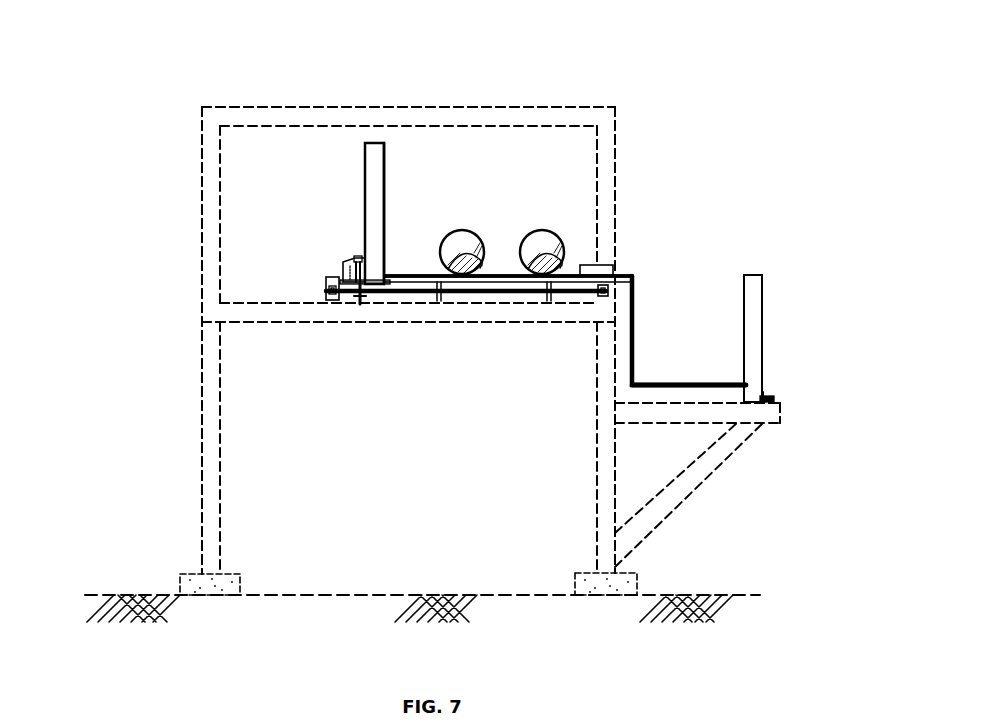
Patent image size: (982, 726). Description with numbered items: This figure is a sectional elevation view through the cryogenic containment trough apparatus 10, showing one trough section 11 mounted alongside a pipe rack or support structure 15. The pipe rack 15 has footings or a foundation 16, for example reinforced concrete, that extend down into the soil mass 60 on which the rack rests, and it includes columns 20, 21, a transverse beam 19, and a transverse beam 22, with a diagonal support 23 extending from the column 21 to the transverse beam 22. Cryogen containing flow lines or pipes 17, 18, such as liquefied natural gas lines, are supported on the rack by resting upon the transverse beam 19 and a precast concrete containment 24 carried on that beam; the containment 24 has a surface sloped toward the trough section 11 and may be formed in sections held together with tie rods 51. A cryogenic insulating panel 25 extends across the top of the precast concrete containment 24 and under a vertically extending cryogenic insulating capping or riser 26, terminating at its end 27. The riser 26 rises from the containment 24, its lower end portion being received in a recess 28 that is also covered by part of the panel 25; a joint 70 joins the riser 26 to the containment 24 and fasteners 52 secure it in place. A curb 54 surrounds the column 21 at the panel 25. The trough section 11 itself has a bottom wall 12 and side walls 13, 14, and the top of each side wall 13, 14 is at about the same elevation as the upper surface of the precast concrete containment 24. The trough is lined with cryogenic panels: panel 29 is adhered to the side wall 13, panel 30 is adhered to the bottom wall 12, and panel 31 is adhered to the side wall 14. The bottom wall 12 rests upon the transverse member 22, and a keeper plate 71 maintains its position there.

The cryogenic containment trough apparatus 10 is at (745, 84).
The trough section 11 is at (762, 313).
The bottom wall 12 is at (705, 403).
The side wall 13 is at (630, 322).
The side wall 14 is at (753, 275).
The pipe rack 15 is at (505, 107).
The footings 16 is at (240, 586).
The flow line 17 is at (462, 230).
The flow line 18 is at (545, 231).
The transverse beam 19 is at (298, 322).
The column 20 is at (202, 376).
The column 21 is at (615, 147).
The transverse beam 22 is at (783, 425).
The diagonal support 23 is at (705, 478).
The precast concrete containment 24 is at (420, 282).
The cryogenic insulating panel 25 is at (387, 168).
The riser 26 is at (370, 193).
The end 27 is at (342, 278).
The recess 28 is at (380, 278).
The cryogenic panel 29 is at (636, 372).
The cryogenic panel 30 is at (700, 383).
The cryogenic panel 31 is at (740, 292).
The tie rods 51 is at (470, 294).
The fasteners 52 is at (362, 297).
The curb 54 is at (586, 265).
The soil mass 60 is at (127, 586).
The joint 70 is at (349, 280).
The keeper plate 71 is at (776, 400).